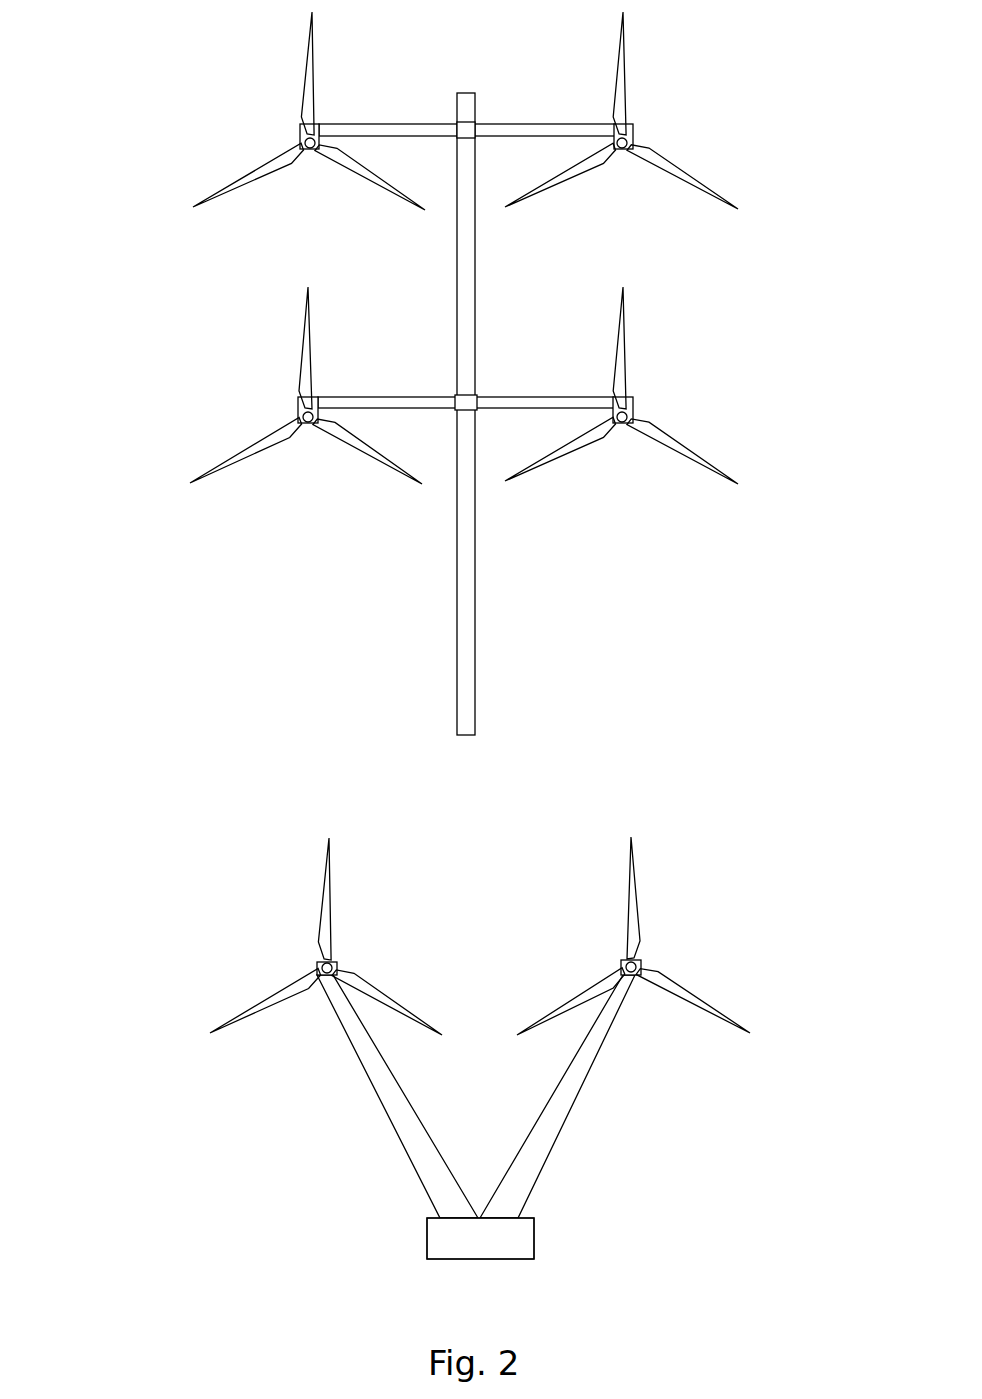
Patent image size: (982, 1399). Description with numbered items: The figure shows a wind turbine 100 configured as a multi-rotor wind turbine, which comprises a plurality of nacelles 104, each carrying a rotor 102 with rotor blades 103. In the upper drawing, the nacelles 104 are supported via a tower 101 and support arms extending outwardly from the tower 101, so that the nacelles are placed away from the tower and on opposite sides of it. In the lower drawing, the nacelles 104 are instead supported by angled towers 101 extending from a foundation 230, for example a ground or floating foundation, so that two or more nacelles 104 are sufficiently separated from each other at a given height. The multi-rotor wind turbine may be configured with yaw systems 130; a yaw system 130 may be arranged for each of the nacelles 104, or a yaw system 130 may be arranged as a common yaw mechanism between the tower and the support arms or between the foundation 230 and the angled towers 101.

The wind turbine 100 is at (121, 102).
The tower 101 is at (452, 590).
The rotor 102 is at (510, 523).
The rotor blade 103 is at (737, 195).
The nacelle 104 is at (290, 415).
The yaw system 130 is at (473, 123).
The foundation 230 is at (535, 1250).